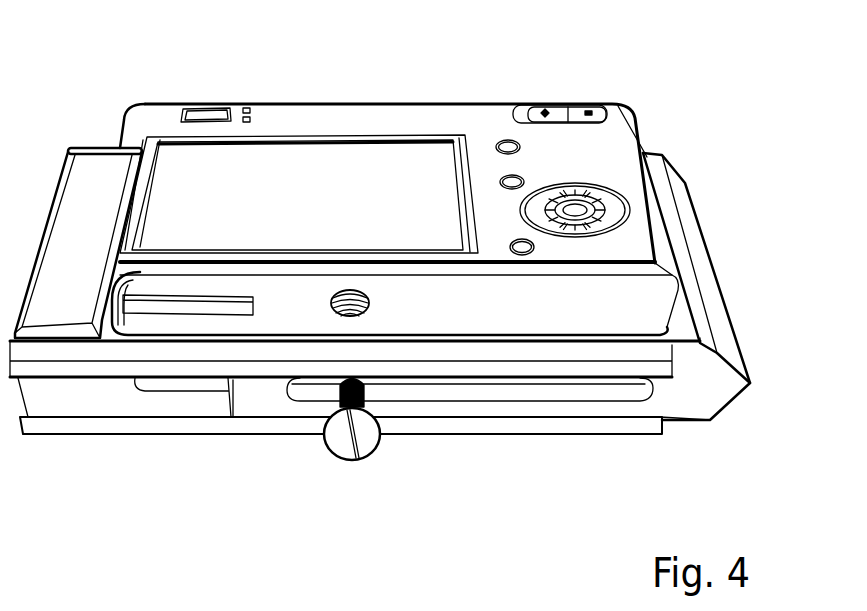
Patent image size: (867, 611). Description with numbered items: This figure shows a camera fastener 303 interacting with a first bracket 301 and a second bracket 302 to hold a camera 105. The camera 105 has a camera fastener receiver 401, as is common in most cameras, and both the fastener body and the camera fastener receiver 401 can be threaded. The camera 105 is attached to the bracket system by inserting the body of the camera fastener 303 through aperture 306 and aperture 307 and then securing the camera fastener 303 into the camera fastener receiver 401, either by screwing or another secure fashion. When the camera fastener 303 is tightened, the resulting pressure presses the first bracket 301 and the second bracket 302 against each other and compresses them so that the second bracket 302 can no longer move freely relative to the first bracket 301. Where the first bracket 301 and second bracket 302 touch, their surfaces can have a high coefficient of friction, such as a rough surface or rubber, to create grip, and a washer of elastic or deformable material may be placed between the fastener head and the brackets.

The camera 105 is at (273, 103).
The camera fastener receiver 401 is at (346, 291).
The first bracket 301 is at (42, 437).
The second bracket 302 is at (673, 412).
The camera fastener 303 is at (370, 453).
The aperture 306 is at (203, 388).
The aperture 307 is at (543, 402).